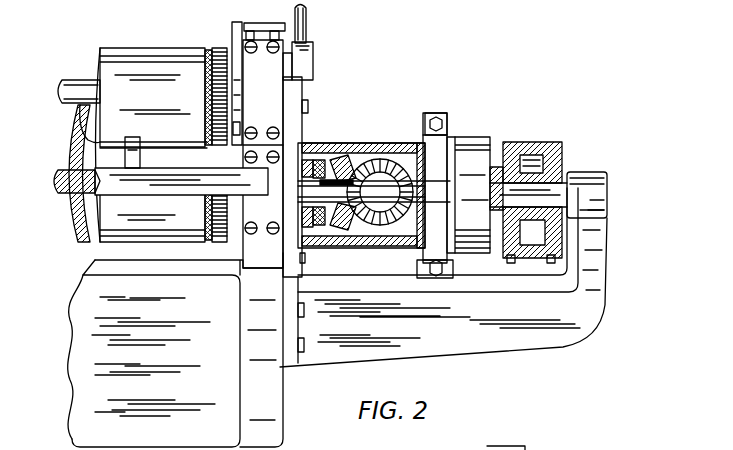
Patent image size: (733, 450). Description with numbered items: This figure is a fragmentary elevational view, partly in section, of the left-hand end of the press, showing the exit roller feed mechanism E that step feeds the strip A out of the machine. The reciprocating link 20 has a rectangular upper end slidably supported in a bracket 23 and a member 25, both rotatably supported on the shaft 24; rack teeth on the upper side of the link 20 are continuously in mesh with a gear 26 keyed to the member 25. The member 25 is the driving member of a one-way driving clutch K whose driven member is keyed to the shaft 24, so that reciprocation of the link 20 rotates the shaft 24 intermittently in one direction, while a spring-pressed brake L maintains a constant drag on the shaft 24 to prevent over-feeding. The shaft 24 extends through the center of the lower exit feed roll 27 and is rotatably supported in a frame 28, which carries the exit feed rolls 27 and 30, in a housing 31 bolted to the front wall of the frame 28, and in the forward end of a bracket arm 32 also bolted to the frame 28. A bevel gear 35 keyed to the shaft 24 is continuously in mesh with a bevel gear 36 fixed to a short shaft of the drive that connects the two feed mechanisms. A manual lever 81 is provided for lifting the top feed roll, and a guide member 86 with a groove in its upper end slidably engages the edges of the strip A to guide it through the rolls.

The link 20 is at (535, 262).
The bracket 23 is at (560, 146).
The shaft 24 is at (70, 192).
The member 25 is at (585, 222).
The gear 26 is at (531, 165).
The lower exit feed roll 27 is at (85, 238).
The frame 28 is at (258, 380).
The exit feed roll 30 is at (172, 50).
The housing 31 is at (368, 156).
The bracket arm 32 is at (527, 342).
The bevel gear 35 is at (348, 156).
The bevel gear 36 is at (392, 153).
The lever 81 is at (306, 28).
The guide member 86 is at (92, 166).
The strip A is at (78, 129).
The roller feed mechanism E is at (104, 279).
The one-way driving clutch K is at (468, 147).
The spring-pressed brake L is at (433, 228).